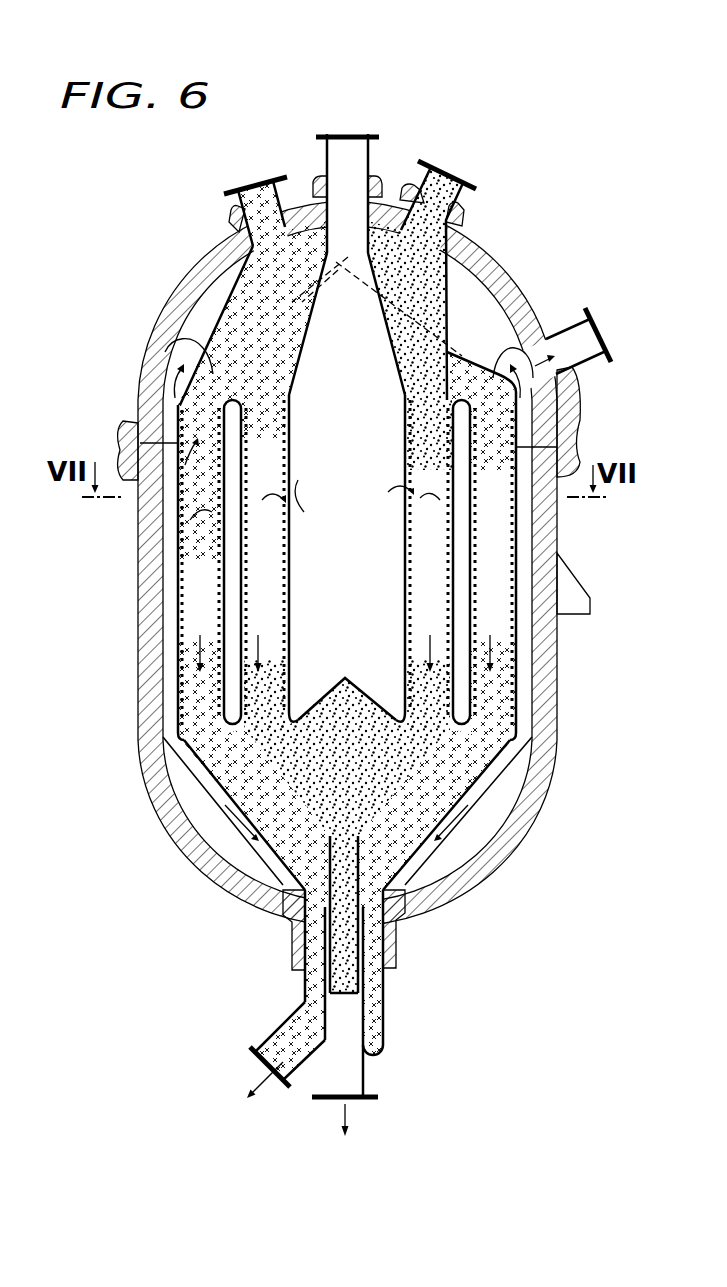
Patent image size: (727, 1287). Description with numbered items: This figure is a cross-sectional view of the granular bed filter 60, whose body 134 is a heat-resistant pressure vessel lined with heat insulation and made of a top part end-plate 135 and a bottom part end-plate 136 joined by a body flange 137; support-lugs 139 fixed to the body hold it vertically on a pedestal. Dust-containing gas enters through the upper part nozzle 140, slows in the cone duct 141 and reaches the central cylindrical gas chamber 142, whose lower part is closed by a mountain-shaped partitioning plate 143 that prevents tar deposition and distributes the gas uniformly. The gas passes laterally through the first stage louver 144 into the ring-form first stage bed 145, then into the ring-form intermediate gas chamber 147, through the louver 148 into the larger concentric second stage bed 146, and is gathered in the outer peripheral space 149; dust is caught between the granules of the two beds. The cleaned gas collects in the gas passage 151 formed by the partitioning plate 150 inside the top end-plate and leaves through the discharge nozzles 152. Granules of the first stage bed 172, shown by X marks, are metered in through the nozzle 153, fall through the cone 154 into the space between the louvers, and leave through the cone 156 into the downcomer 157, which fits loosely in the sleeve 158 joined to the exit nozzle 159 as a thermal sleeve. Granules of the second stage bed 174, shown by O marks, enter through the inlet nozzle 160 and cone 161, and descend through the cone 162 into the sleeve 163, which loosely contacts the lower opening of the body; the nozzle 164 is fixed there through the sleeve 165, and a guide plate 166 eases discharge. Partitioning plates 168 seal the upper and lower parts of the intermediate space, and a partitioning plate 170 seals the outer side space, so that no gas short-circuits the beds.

The reactor vessel 60 is at (560, 702).
The body of the bed 134 is at (557, 527).
The top part end-plate 135 is at (508, 292).
The bottom part end-plate 136 is at (513, 845).
The body flange 137 is at (576, 441).
The support-lugs 139 is at (572, 615).
The upper part nozzle 140 is at (363, 157).
The cone duct 141 is at (302, 347).
The cylindrical gas chamber 142 is at (366, 467).
The partitioning plate 143 is at (338, 678).
The first stage louver 144 is at (243, 500).
The first stage bed 145 is at (276, 576).
The second stage bed 146 is at (218, 612).
The intermediate gas chamber 147 is at (347, 658).
The louver 148 is at (202, 505).
The outer peripheral space 149 is at (170, 543).
The partitioning plate 150 is at (481, 356).
The gas passage 151 is at (213, 340).
The discharge nozzles 152 is at (588, 330).
The nozzle 153 is at (442, 272).
The cone 154 is at (415, 318).
The cone 156 is at (285, 792).
The downcomer 157 is at (381, 888).
The sleeve 158 is at (368, 1027).
The exit nozzle 159 is at (367, 1085).
The inlet nozzle 160 is at (252, 188).
The cone 161 is at (236, 306).
The cone 162 is at (242, 815).
The sleeve 163 is at (300, 937).
The nozzle 164 is at (278, 1036).
The sleeve 165 is at (303, 990).
The guide plate 166 is at (364, 993).
The partitioning plates 168 is at (232, 399).
The partitioning plate 170 is at (168, 742).
The granules of the first stage bed 172 is at (438, 228).
The granules of the second stage bed 174 is at (262, 270).